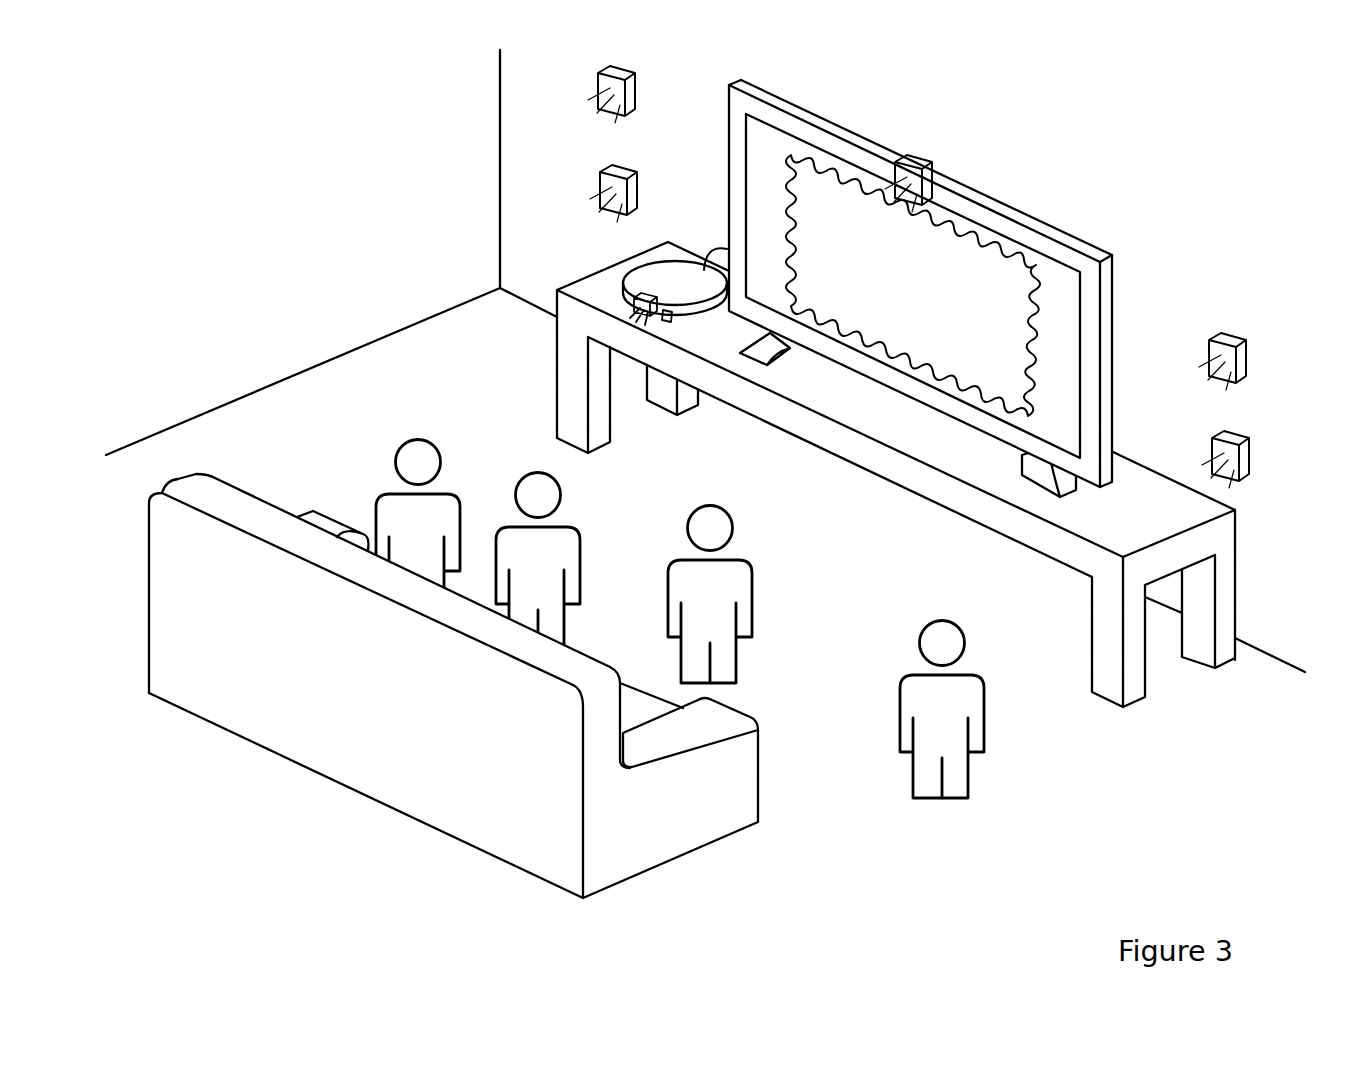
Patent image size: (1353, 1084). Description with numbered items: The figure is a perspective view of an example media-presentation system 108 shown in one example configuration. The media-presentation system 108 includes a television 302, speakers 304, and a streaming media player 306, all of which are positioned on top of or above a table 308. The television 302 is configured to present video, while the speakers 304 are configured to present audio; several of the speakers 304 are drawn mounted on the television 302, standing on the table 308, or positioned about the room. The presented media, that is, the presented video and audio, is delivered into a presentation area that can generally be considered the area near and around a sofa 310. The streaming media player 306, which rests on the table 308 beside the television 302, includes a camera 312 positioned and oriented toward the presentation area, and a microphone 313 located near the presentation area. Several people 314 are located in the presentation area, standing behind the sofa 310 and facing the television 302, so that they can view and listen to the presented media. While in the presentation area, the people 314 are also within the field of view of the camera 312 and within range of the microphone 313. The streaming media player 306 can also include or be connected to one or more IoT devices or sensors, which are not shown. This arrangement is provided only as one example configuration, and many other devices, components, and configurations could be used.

The media-presentation system 108 is at (1298, 594).
The television 302 is at (1048, 222).
The speakers 304 is at (616, 66).
The streaming media player 306 is at (663, 275).
The table 308 is at (985, 513).
The sofa 310 is at (725, 715).
The camera 312 is at (627, 296).
The microphone 313 is at (668, 313).
The people 314 is at (445, 490).